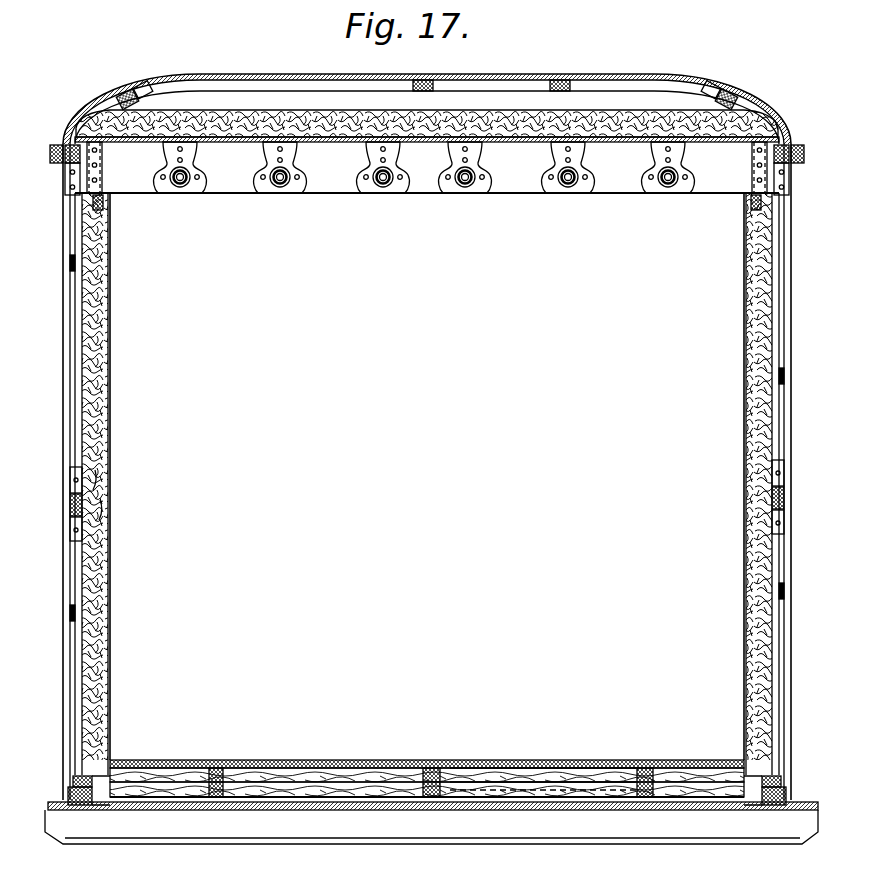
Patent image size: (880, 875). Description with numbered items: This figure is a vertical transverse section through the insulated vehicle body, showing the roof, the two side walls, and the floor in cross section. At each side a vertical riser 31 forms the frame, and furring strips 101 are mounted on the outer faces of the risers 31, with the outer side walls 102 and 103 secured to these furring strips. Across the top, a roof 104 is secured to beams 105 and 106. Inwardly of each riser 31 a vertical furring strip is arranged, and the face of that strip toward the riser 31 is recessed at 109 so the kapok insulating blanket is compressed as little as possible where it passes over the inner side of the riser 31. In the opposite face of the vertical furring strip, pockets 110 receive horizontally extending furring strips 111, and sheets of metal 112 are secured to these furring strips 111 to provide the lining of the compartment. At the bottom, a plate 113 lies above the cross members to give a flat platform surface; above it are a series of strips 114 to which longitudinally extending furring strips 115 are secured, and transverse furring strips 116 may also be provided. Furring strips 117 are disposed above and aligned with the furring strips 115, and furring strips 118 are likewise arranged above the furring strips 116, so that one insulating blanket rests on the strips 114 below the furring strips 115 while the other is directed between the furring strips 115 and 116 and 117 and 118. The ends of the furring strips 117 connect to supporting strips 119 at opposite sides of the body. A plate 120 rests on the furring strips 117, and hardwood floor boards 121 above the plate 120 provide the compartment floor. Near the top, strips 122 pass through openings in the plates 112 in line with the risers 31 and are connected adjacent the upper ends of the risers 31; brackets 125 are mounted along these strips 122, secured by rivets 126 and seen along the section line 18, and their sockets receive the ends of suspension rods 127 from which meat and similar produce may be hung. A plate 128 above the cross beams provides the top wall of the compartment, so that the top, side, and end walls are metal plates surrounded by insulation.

The section line 18- 18 is at (300, 100).
The riser 31 is at (75, 312).
The furring strips 101 is at (70, 259).
The outer side wall 102 is at (104, 306).
The outer side wall 103 is at (100, 267).
The roof 104 is at (508, 78).
The beam 105 is at (522, 82).
The beam 106 is at (424, 91).
The recess 109 is at (96, 445).
The pocket 110 is at (108, 490).
The horizontal furring strip 111 is at (123, 508).
The metal lining sheet 112 is at (105, 640).
The plate 113 is at (546, 809).
The strips 114 is at (590, 800).
The longitudinal furring strip 115 is at (440, 790).
The transverse furring strip 116 is at (312, 790).
The upper furring strip 117 is at (216, 770).
The upper transverse furring strip 118 is at (382, 778).
The supporting strip 119 is at (116, 785).
The floor plate 120 is at (522, 778).
The floor board 121 is at (578, 790).
The strip 122 is at (420, 195).
The bracket 125 is at (258, 180).
The rivet 126 is at (283, 160).
The suspension rod 127 is at (291, 177).
The top plate 128 is at (436, 134).